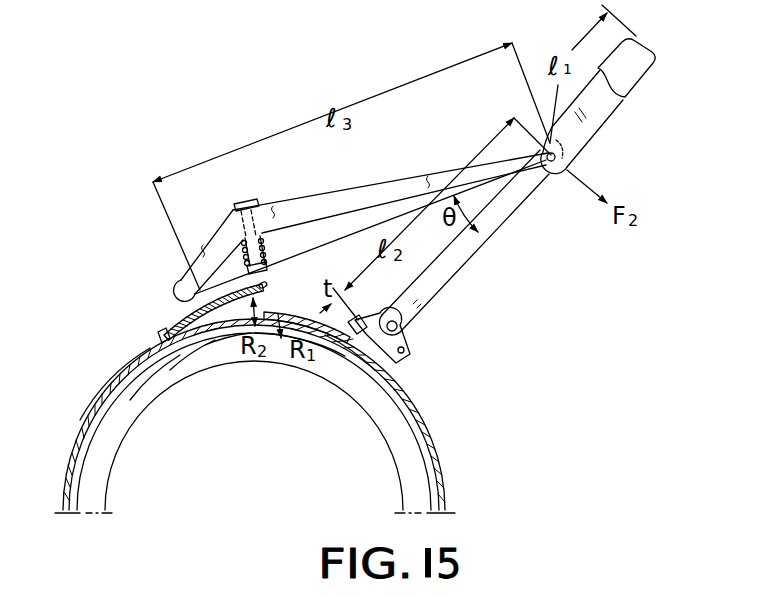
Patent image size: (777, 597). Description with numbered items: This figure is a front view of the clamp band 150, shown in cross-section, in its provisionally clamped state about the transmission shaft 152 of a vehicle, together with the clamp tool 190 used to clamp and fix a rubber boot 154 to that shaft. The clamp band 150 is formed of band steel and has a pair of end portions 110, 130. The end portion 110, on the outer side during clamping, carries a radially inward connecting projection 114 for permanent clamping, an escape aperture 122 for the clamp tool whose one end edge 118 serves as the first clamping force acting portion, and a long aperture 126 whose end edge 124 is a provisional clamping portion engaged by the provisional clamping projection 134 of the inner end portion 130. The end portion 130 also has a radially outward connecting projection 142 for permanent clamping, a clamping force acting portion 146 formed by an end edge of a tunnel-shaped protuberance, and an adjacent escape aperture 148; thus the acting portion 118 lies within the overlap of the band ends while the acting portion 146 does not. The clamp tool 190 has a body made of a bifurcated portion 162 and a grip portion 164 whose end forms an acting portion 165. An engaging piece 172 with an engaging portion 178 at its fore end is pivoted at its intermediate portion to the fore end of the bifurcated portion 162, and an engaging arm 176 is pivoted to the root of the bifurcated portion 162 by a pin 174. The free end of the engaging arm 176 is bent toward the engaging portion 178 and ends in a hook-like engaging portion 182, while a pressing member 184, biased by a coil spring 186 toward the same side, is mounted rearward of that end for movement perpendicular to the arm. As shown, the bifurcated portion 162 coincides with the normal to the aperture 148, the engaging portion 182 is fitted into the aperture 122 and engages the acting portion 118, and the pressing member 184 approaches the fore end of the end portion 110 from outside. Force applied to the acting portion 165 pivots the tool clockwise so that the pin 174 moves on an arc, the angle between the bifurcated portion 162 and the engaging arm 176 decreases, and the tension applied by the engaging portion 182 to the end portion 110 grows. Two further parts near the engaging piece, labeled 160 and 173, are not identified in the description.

The end portion 110 is at (227, 294).
The connecting projection 114 is at (230, 342).
The clamping force acting portion 118 is at (198, 360).
The escape aperture 122 is at (180, 305).
The provisional clamping portion 124 is at (173, 367).
The long aperture 126 is at (120, 366).
The end portion 130 is at (280, 337).
The provisional clamping projection 134 is at (160, 333).
The connecting projection 142 is at (308, 296).
The clamping force acting portion 146 is at (333, 353).
The escape aperture 148 is at (353, 350).
The clamp band 150 is at (75, 428).
The transmission shaft 152 is at (403, 432).
The rubber boot 154 is at (440, 470).
The pivot pin 160 is at (398, 327).
The bifurcated portion 162 is at (478, 257).
The grip portion 164 is at (604, 112).
The acting portion 165 is at (646, 50).
The engaging piece 172 is at (412, 346).
The bracket hole 173 is at (406, 358).
The pin 174 is at (554, 170).
The engaging arm 176 is at (371, 190).
The engaging portion 178 is at (360, 318).
The engaging portion 182 is at (200, 283).
The pressing member 184 is at (252, 203).
The coil spring 186 is at (273, 240).
The clamp tool 190 is at (452, 147).